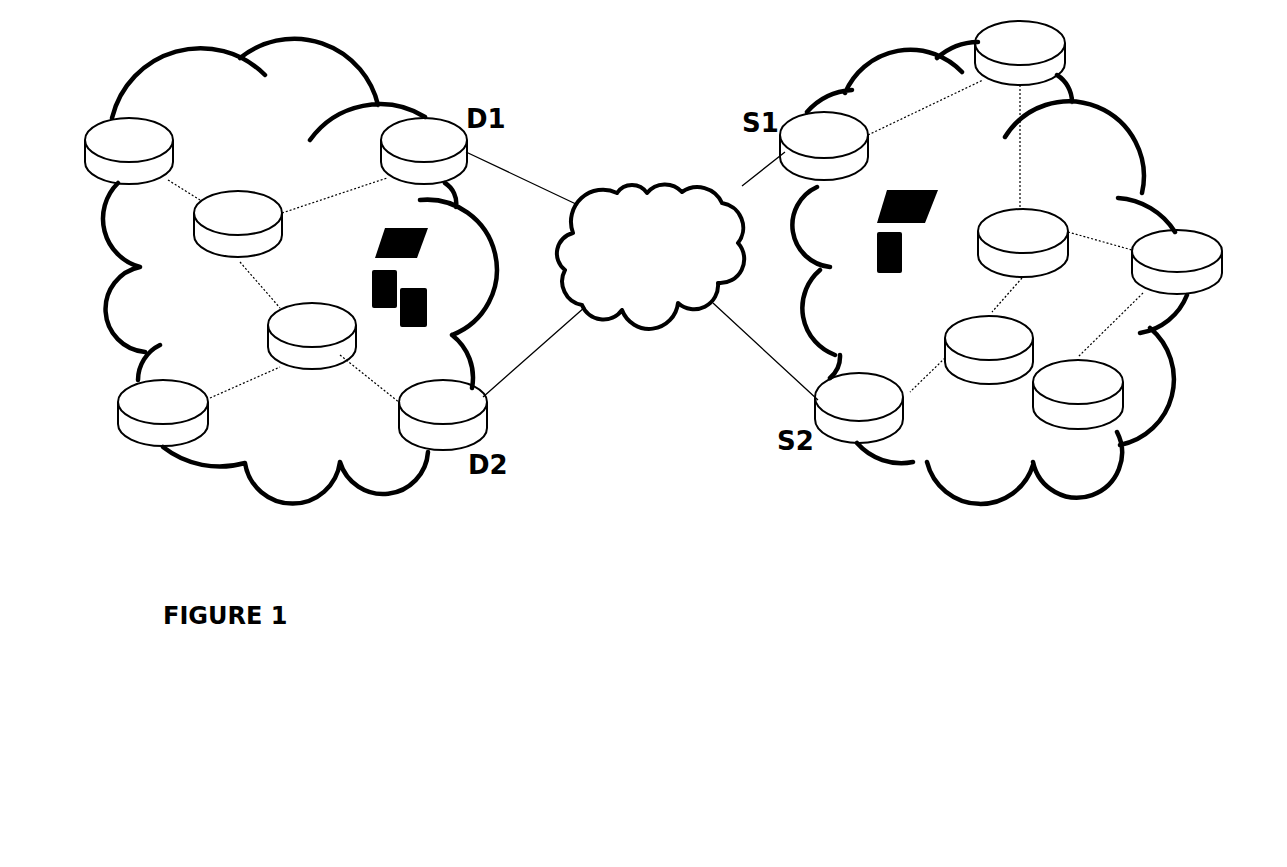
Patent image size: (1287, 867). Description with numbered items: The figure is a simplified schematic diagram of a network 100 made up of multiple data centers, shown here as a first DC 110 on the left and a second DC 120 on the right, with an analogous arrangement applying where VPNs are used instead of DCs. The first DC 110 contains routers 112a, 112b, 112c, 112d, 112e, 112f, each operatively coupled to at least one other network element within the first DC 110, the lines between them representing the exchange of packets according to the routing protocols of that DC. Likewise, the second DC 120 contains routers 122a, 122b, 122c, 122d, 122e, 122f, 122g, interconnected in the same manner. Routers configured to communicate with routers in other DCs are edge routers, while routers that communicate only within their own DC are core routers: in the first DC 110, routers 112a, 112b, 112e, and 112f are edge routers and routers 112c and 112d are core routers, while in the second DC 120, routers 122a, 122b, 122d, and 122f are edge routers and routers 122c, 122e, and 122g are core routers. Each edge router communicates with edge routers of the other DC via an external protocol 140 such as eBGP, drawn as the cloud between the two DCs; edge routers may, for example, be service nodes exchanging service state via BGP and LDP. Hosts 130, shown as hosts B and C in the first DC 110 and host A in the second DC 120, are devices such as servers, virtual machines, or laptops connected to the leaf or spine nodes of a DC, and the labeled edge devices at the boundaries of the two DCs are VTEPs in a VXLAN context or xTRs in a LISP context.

The network 100 is at (628, 557).
The first DC 110 is at (300, 271).
The second DC 120 is at (989, 273).
The hosts 130 is at (897, 480).
The external protocol 140 is at (650, 256).
The router 112a is at (129, 151).
The router 112b is at (424, 151).
The router 112c is at (238, 224).
The router 112d is at (312, 336).
The router 112e is at (163, 413).
The router 112f is at (443, 415).
The router 122a is at (1020, 53).
The router 122b is at (824, 146).
The router 122c is at (1023, 243).
The router 122d is at (1177, 262).
The router 122e is at (989, 350).
The router 122f is at (859, 408).
The router 122g is at (1078, 394).